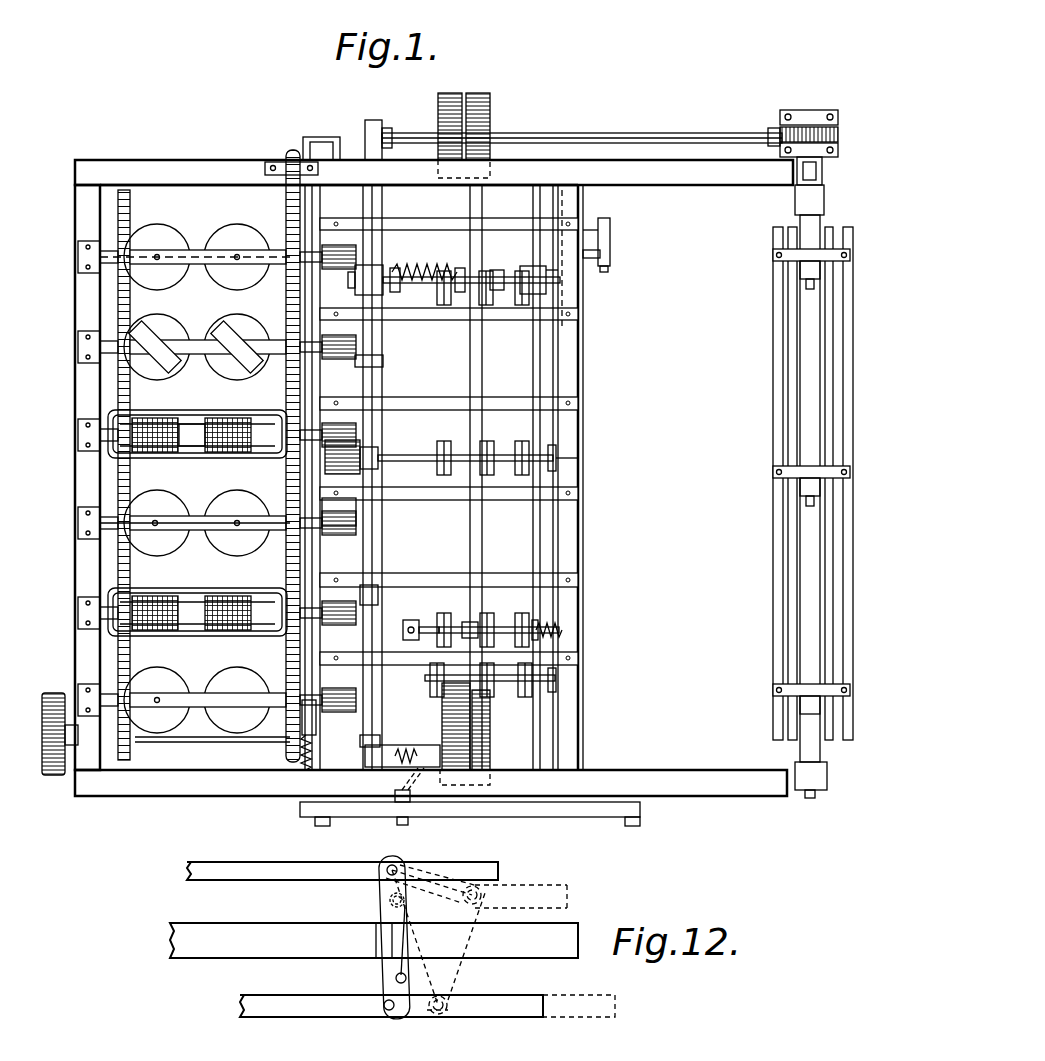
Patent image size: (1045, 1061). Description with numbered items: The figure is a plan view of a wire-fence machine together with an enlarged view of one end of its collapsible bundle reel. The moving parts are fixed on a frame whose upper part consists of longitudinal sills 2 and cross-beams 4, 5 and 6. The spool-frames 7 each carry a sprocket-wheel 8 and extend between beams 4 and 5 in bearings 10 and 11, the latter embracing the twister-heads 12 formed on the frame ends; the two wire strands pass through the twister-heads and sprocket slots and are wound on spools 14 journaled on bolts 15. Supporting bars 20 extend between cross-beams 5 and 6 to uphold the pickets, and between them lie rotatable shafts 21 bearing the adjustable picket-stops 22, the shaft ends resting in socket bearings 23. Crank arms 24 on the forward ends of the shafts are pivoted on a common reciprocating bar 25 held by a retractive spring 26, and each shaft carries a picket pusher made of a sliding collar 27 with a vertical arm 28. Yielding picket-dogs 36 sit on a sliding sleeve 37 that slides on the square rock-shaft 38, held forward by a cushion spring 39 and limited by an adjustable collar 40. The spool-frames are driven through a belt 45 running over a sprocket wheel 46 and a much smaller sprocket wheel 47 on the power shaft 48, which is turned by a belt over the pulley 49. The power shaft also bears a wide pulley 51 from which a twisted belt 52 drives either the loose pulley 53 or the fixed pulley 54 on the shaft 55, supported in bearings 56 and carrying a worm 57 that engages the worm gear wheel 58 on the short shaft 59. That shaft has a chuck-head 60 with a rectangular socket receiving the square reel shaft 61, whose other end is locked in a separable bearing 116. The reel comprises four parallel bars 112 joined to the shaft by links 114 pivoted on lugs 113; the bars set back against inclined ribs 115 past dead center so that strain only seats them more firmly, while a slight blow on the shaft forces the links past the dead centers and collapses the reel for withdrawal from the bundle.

In FIG. 1, the longitudinal sills 2 is at (434, 478).
In FIG. 1, the cross-beam 4 is at (78, 300).
In FIG. 1, the cross-beam 5 is at (378, 392).
In FIG. 1, the cross-beam 6 is at (575, 296).
In FIG. 1, the spool-frames 7 is at (200, 412).
In FIG. 1, the sprocket-wheel 8 is at (286, 240).
In FIG. 1, the bearings 10 is at (78, 262).
In FIG. 1, the bearings 11 is at (372, 446).
In FIG. 1, the twister-heads 12 is at (362, 452).
In FIG. 1, the spools 14 is at (222, 452).
In FIG. 1, the bolts 15 is at (160, 455).
In FIG. 1, the supporting slats or bars 20 is at (432, 398).
In FIG. 1, the rotatable shafts 21 is at (418, 462).
In FIG. 1, the picket-stops 22 is at (520, 448).
In FIG. 1, the socket bearings 23 is at (560, 452).
In FIG. 1, the crank arms 24 is at (302, 645).
In FIG. 1, the reciprocating bar 25 is at (345, 560).
In FIG. 1, the retractive spring 26 is at (302, 748).
In FIG. 1, the sliding collar 27 is at (375, 296).
In FIG. 1, the vertical arm 28 is at (360, 262).
In FIG. 1, the yielding picket-dogs 36 is at (448, 618).
In FIG. 1, the sliding sleeve 37 is at (472, 620).
In FIG. 1, the square rock-shaft 38 is at (425, 617).
In FIG. 1, the cushion spring 39 is at (565, 628).
In FIG. 1, the adjustable collar 40 is at (424, 642).
In FIG. 1, the belt 45 is at (205, 334).
In FIG. 1, the sprocket wheel 46 is at (135, 218).
In FIG. 1, the sprocket wheel 47 is at (130, 740).
In FIG. 1, the power shaft 48 is at (210, 742).
In FIG. 1, the pulley 49 is at (55, 775).
In FIG. 1, the wide pulley 51 is at (462, 770).
In FIG. 1, the twisted belt 52 is at (492, 752).
In FIG. 1, the loose pulley 53 is at (490, 115).
In FIG. 1, the fixed pulley 54 is at (440, 110).
In FIG. 1, the shaft 55 is at (610, 133).
In FIG. 1, the bearings 56 is at (368, 122).
In FIG. 1, the worm 57 is at (805, 125).
In FIG. 1, the worm gear wheel 58 is at (838, 132).
In FIG. 1, the short shaft 59 is at (816, 170).
In FIG. 1, the chuck-head 60 is at (822, 202).
In FIG. 1, the reel shaft 61 is at (802, 222).
In FIG. 12, the reel shaft 61 is at (374, 940).
In FIG. 1, the parallel bars 112 is at (773, 362).
In FIG. 12, the parallel bars 112 is at (310, 868).
In FIG. 12, the lugs 113 is at (395, 902).
In FIG. 1, the links 114 is at (778, 262).
In FIG. 12, the links 114 is at (392, 864).
In FIG. 1, the shoulders or ribs 115 is at (800, 488).
In FIG. 12, the shoulders or ribs 115 is at (376, 942).
In FIG. 1, the separable bearing 116 is at (818, 798).